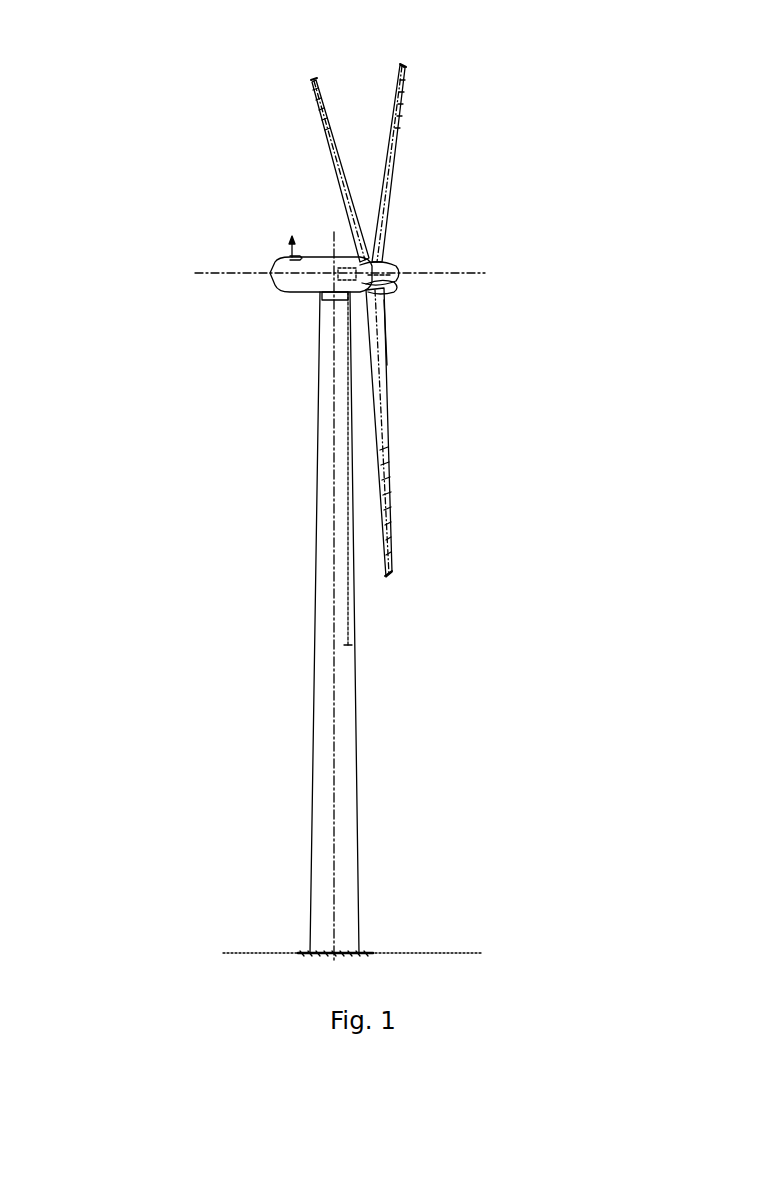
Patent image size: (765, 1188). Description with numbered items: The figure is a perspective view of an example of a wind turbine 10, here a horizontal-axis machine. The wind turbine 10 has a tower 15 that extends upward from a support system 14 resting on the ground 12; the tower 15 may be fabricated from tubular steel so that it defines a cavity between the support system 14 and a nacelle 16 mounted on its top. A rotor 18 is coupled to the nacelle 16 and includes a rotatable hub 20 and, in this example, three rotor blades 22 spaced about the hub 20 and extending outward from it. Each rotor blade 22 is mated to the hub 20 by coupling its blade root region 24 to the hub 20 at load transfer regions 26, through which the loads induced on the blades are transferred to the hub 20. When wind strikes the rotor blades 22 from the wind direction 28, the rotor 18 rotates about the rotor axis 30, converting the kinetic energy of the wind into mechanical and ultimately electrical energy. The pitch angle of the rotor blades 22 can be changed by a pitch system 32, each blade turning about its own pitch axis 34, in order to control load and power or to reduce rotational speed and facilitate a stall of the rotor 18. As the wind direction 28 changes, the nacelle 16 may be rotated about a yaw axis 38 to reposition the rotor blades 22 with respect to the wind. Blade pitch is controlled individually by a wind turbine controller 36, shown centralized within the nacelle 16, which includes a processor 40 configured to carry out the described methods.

The wind turbine 10 is at (128, 92).
The ground 12 is at (243, 952).
The support system 14 is at (300, 952).
The tower 15 is at (320, 600).
The nacelle 16 is at (290, 292).
The rotor 18 is at (402, 190).
The hub 20 is at (398, 268).
The rotor blade 22 is at (328, 142).
The blade root region 24 is at (388, 362).
The load transfer region 26 is at (386, 291).
The wind direction 28 is at (593, 273).
The rotor axis 30 is at (458, 277).
The pitch system 32 is at (382, 318).
The pitch axis 34 is at (311, 82).
The wind turbine controller 36 is at (332, 304).
The yaw axis 38 is at (338, 660).
The processor 40 is at (348, 250).